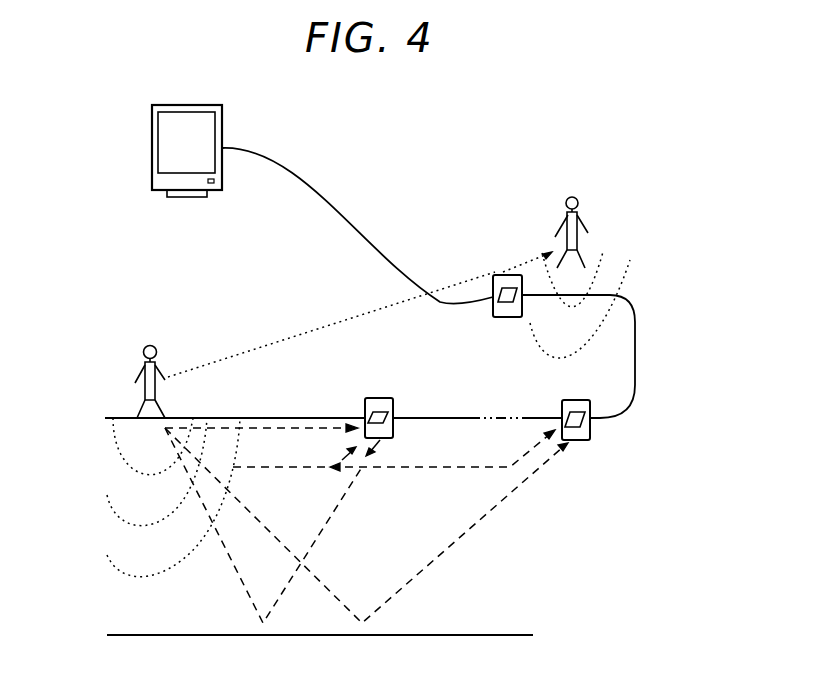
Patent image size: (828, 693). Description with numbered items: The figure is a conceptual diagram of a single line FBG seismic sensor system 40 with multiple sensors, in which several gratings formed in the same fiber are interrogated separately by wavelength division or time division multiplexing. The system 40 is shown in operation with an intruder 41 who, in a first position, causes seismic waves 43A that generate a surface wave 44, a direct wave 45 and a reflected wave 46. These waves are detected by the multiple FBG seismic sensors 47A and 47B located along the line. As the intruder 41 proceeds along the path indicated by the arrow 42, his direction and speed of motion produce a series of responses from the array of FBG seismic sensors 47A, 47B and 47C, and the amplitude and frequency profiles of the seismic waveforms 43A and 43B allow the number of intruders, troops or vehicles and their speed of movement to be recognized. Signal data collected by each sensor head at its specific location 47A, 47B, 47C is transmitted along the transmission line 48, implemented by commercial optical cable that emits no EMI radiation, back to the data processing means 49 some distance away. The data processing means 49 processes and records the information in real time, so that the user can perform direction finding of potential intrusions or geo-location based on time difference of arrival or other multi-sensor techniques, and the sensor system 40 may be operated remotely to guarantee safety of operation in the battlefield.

The single line FBG seismic sensor system 40 is at (739, 367).
The intruder 41 is at (143, 398).
The arrow 42 is at (292, 335).
The seismic waves 43A is at (120, 513).
The seismic waveforms 43B is at (628, 270).
The surface wave 44 is at (272, 418).
The direct wave 45 is at (418, 470).
The reflected wave 46 is at (467, 533).
The FBG seismic sensor 47A is at (375, 398).
The FBG seismic sensor 47B is at (588, 430).
The FBG seismic sensor 47C is at (503, 275).
The transmission line 48 is at (340, 210).
The data processing means 49 is at (152, 150).